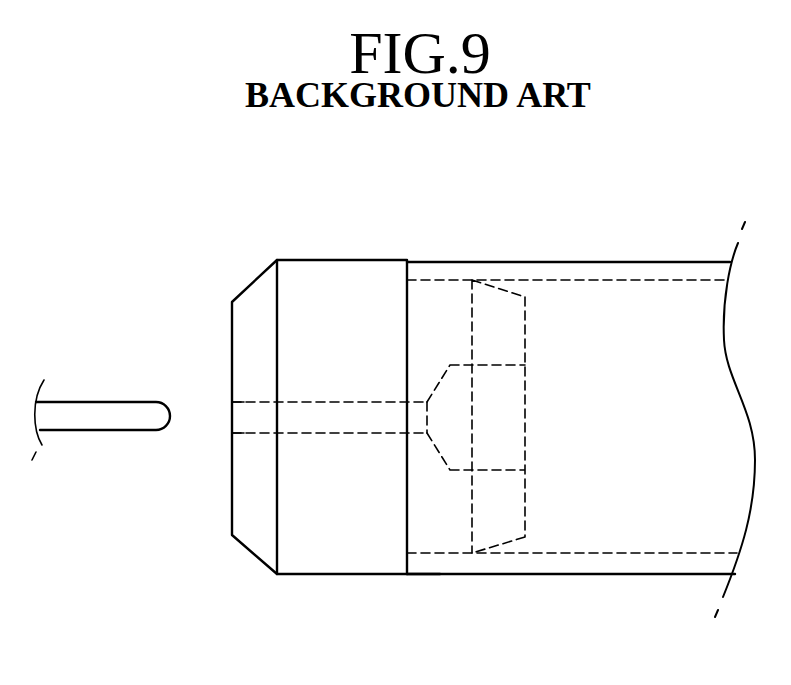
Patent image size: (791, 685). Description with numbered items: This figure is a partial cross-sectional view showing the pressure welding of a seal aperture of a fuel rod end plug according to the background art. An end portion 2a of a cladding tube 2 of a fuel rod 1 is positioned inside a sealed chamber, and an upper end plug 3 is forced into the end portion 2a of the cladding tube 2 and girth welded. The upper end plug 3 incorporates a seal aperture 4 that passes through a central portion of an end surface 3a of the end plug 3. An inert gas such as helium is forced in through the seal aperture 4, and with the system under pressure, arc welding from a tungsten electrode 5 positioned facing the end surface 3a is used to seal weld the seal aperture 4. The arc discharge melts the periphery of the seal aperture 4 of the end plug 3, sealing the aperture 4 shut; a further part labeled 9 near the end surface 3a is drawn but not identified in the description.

The fuel rod 1 is at (305, 250).
The cladding tube 2 is at (537, 262).
The end portion 2a is at (427, 576).
The upper end plug 3 is at (347, 282).
The end surface 3a is at (230, 315).
The seal aperture 4 is at (232, 410).
The tungsten electrode 5 is at (77, 431).
The hole entrance 9 is at (232, 445).